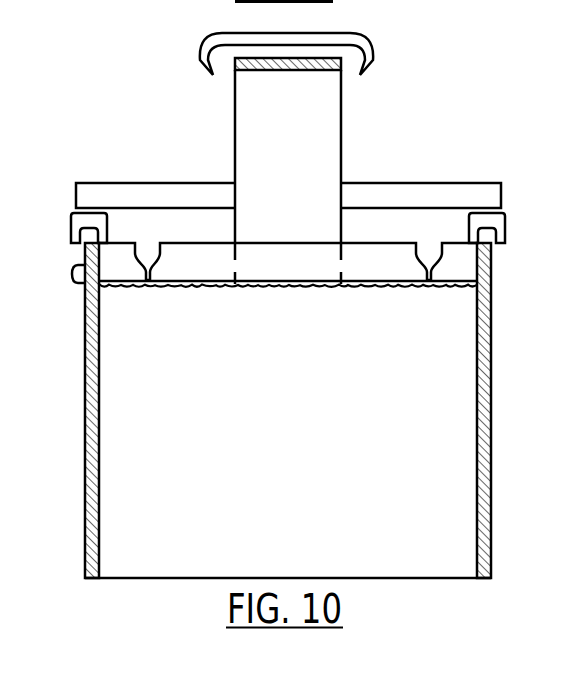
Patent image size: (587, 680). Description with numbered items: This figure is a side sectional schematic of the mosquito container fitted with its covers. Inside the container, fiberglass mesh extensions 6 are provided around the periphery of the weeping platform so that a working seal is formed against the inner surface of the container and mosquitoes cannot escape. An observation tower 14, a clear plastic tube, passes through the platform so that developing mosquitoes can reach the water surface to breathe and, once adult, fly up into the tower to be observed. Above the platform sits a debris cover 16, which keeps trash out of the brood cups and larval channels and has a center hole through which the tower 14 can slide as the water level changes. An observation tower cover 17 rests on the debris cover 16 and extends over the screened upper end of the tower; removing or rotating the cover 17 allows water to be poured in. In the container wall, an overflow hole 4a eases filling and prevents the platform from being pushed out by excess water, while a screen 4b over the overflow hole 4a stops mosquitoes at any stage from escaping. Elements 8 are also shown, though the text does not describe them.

The observation tower cover 17 is at (213, 35).
The observation tower 14 is at (341, 115).
The debris cover 16 is at (462, 183).
The clip 8 is at (71, 223).
The fiberglass mesh extension 6 is at (440, 254).
The overflow hole 4a is at (88, 306).
The screen 4b is at (72, 274).